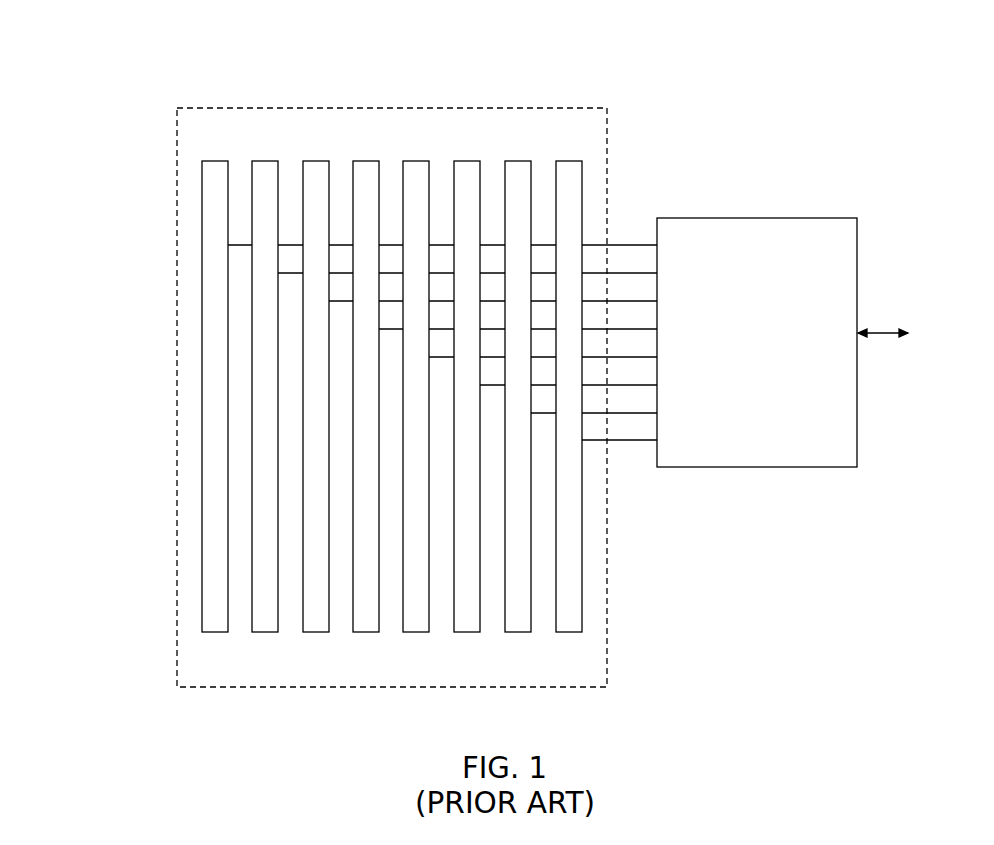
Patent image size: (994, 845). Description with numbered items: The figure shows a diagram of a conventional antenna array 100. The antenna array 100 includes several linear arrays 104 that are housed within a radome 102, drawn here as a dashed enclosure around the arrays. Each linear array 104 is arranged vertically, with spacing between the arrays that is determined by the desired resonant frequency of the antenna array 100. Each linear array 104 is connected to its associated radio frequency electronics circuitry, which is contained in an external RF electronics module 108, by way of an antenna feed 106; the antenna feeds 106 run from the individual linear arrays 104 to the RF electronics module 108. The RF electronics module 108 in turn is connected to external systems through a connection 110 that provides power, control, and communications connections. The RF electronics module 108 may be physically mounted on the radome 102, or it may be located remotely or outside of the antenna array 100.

The antenna array 100 is at (100, 53).
The radome 102 is at (177, 127).
The linear array 104 is at (212, 257).
The antenna feed 106 is at (617, 243).
The RF electronics module 108 is at (798, 222).
The connection 110 is at (902, 334).